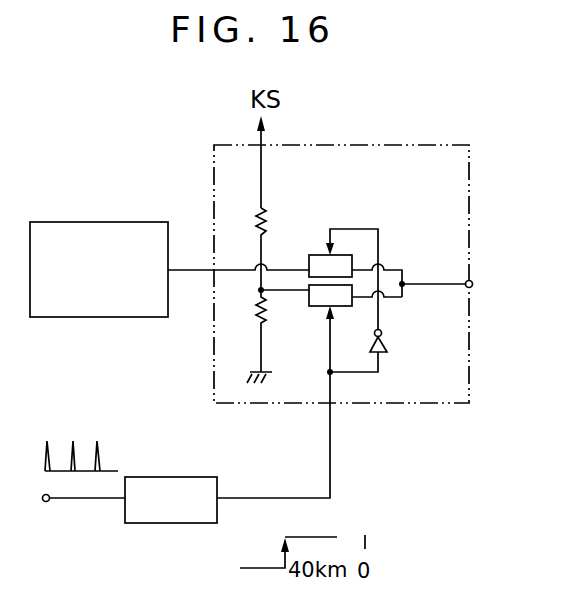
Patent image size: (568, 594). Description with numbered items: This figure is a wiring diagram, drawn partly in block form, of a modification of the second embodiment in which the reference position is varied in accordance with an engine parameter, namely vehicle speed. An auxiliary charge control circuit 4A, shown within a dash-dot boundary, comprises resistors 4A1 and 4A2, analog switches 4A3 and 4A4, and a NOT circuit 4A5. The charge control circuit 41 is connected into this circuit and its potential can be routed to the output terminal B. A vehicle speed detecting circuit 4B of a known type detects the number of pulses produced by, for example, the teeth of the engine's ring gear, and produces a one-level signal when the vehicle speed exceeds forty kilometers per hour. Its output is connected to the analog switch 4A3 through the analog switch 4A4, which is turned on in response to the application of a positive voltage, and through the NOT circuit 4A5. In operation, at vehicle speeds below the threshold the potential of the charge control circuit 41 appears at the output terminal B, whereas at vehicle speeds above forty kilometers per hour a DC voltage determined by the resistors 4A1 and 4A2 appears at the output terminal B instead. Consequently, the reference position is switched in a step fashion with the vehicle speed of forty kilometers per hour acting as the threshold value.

The charge control circuit 41 is at (137, 222).
The auxiliary charge control circuit 4A is at (437, 403).
The resistor 4A1 is at (263, 213).
The resistor 4A2 is at (266, 319).
The analog switch 4A3 is at (353, 256).
The analog switch 4A4 is at (353, 302).
The NOT circuit 4A5 is at (386, 343).
The vehicle speed detecting circuit 4B is at (170, 524).
The output terminal B is at (471, 281).